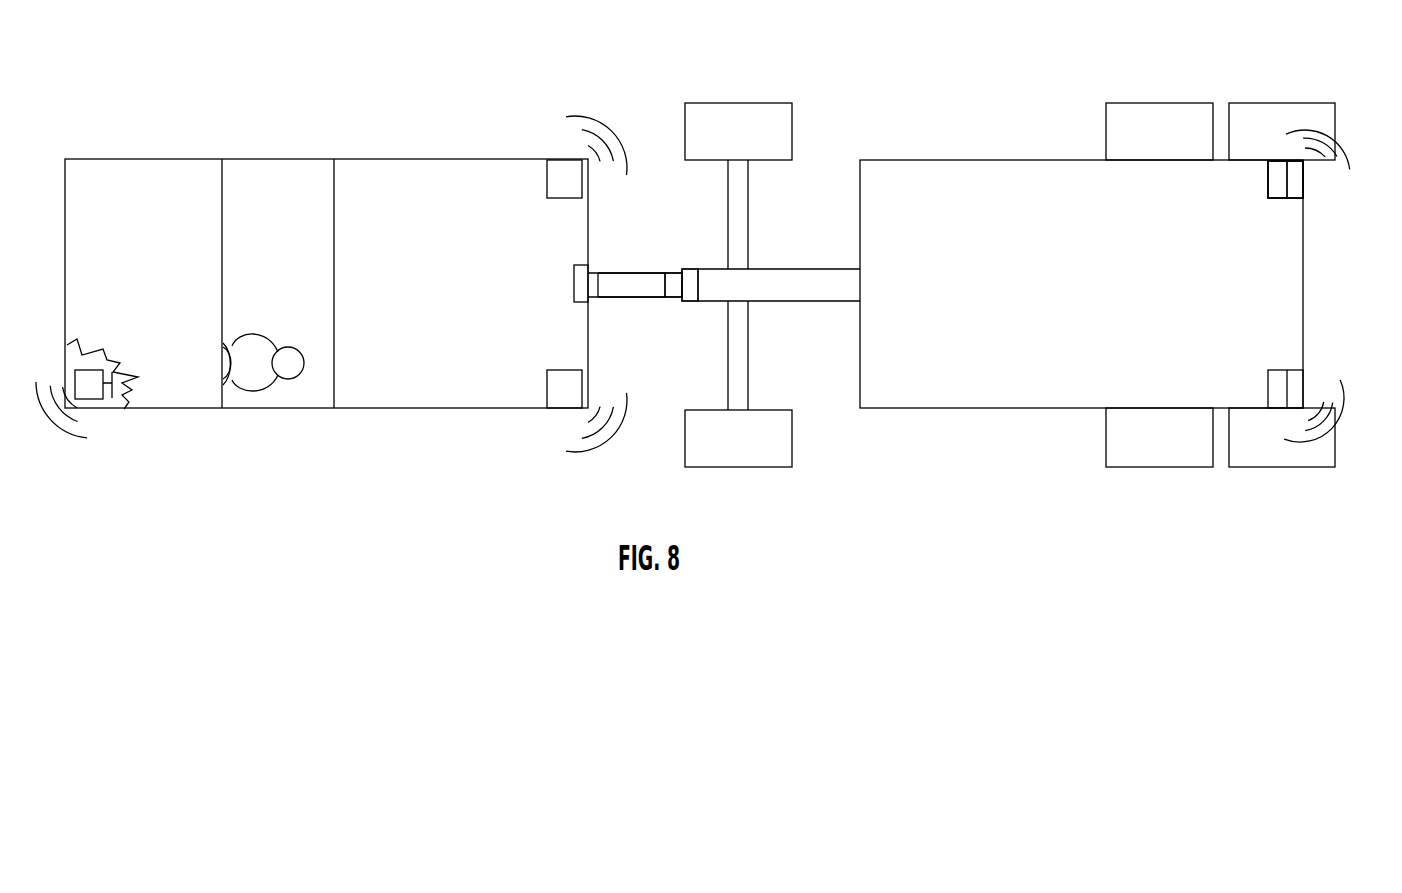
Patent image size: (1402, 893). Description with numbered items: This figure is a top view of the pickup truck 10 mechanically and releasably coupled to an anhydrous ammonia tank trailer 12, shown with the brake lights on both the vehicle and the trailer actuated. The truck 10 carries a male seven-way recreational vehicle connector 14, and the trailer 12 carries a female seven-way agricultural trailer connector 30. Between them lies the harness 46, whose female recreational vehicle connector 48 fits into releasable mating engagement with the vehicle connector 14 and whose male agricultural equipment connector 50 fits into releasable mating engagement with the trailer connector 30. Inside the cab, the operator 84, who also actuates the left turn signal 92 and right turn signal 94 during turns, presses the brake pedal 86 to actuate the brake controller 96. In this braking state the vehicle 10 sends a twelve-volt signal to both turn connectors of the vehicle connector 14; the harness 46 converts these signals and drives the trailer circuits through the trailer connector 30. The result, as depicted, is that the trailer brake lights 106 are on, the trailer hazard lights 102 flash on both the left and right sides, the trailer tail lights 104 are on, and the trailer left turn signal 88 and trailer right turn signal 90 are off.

The pickup truck 10 is at (401, 110).
The anhydrous ammonia tank trailer 12 is at (1025, 110).
The vehicle connector 14 is at (582, 276).
The trailer connector 30 is at (673, 278).
The harness 46 is at (658, 313).
The female 7-way recreational vehicle connector 48 is at (595, 288).
The male 7-way agricultural equipment connector 50 is at (692, 277).
The operator 84 is at (298, 358).
The brake pedal 86 is at (113, 392).
The trailer left turn signal 88 is at (1300, 387).
The trailer right turn signal 90 is at (1305, 192).
The left turn signal 92 is at (562, 398).
The right turn signal 94 is at (557, 168).
The brake controller 96 is at (82, 375).
The trailer hazard lights 102 is at (1295, 175).
The trailer tail lights 104 is at (1272, 182).
The trailer brake lights 106 is at (1275, 162).